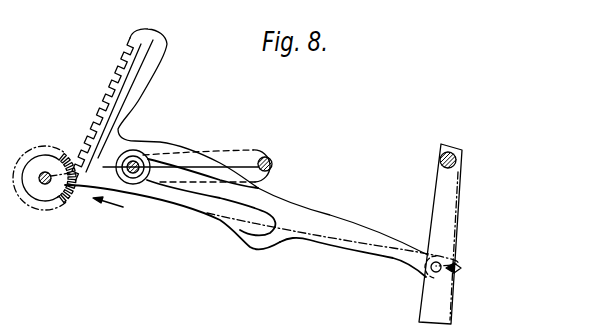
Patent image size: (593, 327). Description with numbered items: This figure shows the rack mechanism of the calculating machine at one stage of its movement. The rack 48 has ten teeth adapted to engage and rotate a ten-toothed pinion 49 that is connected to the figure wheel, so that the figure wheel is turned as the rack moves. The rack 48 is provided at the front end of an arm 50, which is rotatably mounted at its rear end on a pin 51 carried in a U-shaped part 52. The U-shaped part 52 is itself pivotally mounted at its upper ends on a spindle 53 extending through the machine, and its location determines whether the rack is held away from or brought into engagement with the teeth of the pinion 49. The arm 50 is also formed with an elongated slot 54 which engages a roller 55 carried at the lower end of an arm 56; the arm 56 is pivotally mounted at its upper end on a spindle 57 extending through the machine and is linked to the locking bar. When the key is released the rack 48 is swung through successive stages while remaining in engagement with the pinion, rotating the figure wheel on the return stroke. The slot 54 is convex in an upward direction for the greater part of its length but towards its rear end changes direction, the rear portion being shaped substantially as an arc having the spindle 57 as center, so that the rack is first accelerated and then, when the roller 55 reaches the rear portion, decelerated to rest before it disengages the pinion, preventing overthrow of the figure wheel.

The rack 48 is at (155, 32).
The pinion 49 is at (48, 207).
The arm 50 is at (322, 227).
The pin 51 is at (461, 267).
The U-shaped part 52 is at (453, 180).
The spindle 53 is at (463, 148).
The elongated slot 54 is at (232, 207).
The roller 55 is at (139, 184).
The arm 56 is at (266, 157).
The spindle 57 is at (276, 162).